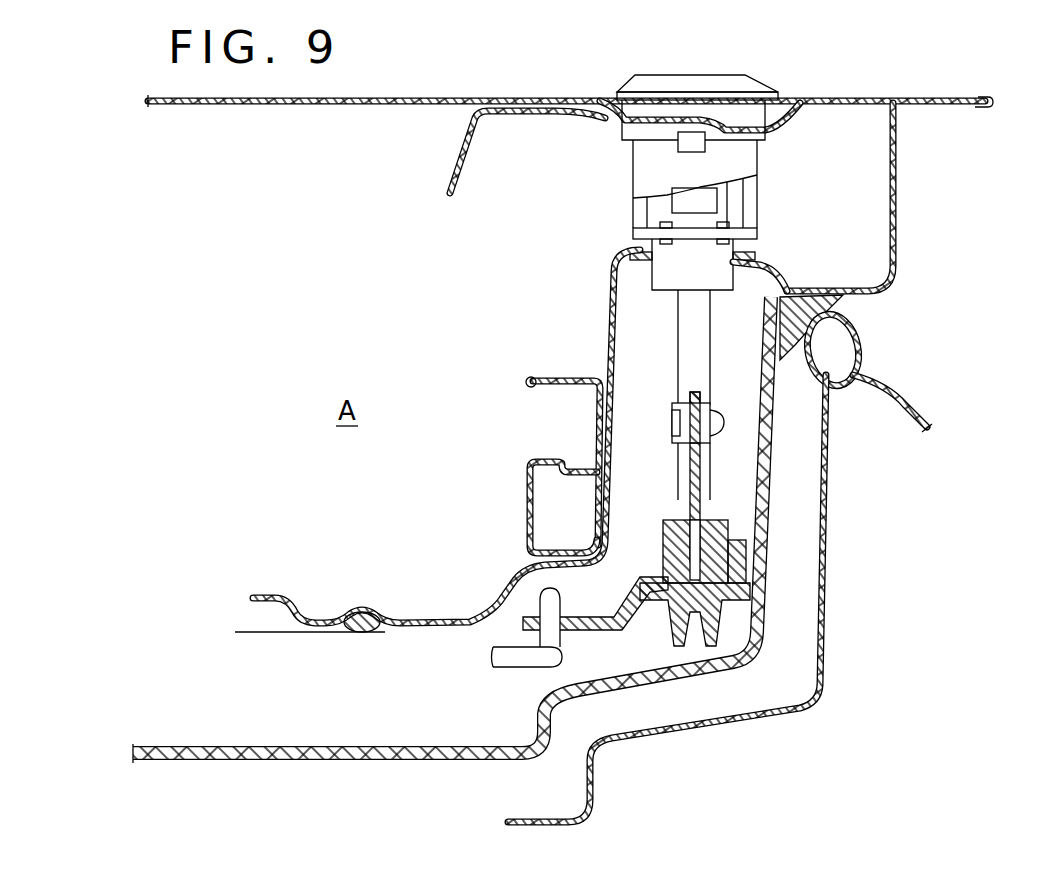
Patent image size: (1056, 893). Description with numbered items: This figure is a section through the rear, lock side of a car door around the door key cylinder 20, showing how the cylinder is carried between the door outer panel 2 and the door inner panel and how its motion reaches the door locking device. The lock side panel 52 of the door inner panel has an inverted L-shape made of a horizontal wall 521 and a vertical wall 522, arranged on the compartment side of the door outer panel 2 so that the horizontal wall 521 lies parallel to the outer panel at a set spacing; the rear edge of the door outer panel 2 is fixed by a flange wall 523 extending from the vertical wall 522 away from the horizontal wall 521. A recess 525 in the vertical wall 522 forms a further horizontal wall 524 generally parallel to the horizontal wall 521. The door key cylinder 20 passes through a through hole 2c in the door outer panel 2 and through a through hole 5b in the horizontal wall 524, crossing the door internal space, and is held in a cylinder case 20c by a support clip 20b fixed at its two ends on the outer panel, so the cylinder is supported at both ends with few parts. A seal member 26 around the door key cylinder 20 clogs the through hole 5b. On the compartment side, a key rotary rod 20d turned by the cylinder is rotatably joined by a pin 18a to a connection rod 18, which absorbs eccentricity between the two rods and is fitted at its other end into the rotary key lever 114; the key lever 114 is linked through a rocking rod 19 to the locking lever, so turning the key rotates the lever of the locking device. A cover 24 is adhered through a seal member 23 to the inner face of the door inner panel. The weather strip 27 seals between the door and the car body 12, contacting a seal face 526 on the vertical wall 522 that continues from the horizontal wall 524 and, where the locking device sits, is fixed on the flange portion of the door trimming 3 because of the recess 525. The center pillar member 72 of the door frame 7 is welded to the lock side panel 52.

The door outer panel 2 is at (882, 95).
The through hole 2c is at (640, 124).
The door trimming 3 is at (348, 764).
The through hole 5b is at (720, 262).
The door frame 7 is at (520, 392).
The car body 12 is at (812, 700).
The connection rod 18 is at (700, 467).
The pin 18a is at (670, 420).
The rocking rod 19 is at (518, 657).
The door key cylinder 20 is at (762, 78).
The support clip 20b is at (467, 150).
The cylinder case 20c is at (655, 188).
The key rotary rod 20d is at (697, 360).
The seal member 23 is at (357, 640).
The cover 24 is at (258, 638).
The seal member 26 is at (630, 252).
The weather strip 27 is at (860, 342).
The lock side panel 52 is at (905, 203).
The center pillar member 72 is at (526, 492).
The key lever 114 is at (728, 546).
The horizontal wall 521 is at (414, 630).
The vertical wall 522 is at (628, 322).
The flange wall 523 is at (952, 98).
The horizontal wall 524 is at (768, 277).
The recess 525 is at (612, 368).
The seal face 526 is at (855, 294).